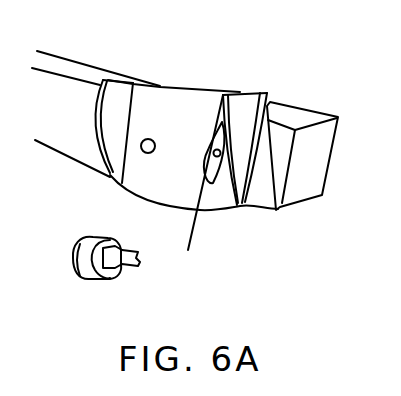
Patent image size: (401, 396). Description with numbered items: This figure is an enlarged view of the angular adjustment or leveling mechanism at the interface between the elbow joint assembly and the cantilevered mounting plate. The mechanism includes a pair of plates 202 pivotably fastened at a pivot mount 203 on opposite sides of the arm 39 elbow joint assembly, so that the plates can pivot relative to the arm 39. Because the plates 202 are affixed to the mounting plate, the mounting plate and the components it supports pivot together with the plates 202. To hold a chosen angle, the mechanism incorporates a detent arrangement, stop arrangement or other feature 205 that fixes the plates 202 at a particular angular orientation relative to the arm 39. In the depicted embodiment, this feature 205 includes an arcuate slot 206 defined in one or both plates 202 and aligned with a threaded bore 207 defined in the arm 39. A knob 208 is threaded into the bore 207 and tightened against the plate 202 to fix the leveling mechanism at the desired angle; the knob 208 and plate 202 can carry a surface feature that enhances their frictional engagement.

The arm 39 is at (300, 112).
The plates 202 is at (158, 88).
The pivot mount 203 is at (157, 137).
The detent or stop arrangement 205 is at (191, 193).
The arcuate slot 206 is at (223, 95).
The threaded bore 207 is at (218, 185).
The knob 208 is at (93, 237).